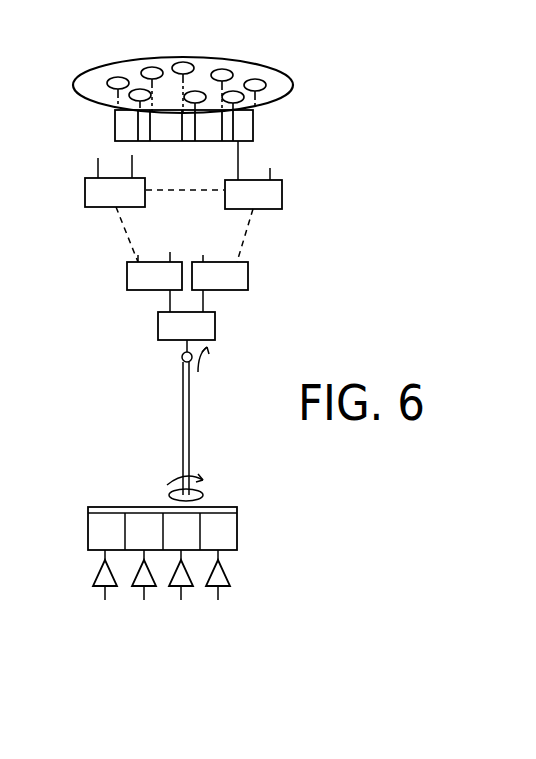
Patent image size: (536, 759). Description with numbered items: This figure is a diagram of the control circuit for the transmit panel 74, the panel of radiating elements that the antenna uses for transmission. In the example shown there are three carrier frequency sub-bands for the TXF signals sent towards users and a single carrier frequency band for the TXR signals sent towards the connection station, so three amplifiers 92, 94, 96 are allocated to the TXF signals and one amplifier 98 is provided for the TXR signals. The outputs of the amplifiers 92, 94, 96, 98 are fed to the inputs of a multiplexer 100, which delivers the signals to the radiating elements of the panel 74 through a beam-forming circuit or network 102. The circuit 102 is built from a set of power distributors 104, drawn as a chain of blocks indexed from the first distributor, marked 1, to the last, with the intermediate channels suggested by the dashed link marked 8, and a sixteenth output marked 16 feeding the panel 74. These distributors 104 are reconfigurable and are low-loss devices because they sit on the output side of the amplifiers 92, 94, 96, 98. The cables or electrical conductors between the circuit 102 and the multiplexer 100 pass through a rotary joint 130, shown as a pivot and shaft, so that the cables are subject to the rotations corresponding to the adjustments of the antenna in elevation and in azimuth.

The transmit panel of radiating elements 74 is at (161, 58).
The first channel 1 is at (114, 180).
The sixteenth channel 16 is at (258, 180).
The intermediate channels 8 is at (185, 182).
The power distributors 104 is at (147, 243).
The beam-forming circuit 102 is at (198, 228).
The rotary joint 130 is at (182, 358).
The multiplexer 100 is at (237, 532).
The amplifier 92 is at (98, 587).
The amplifier 94 is at (142, 588).
The amplifier 96 is at (181, 588).
The amplifier 98 is at (225, 590).